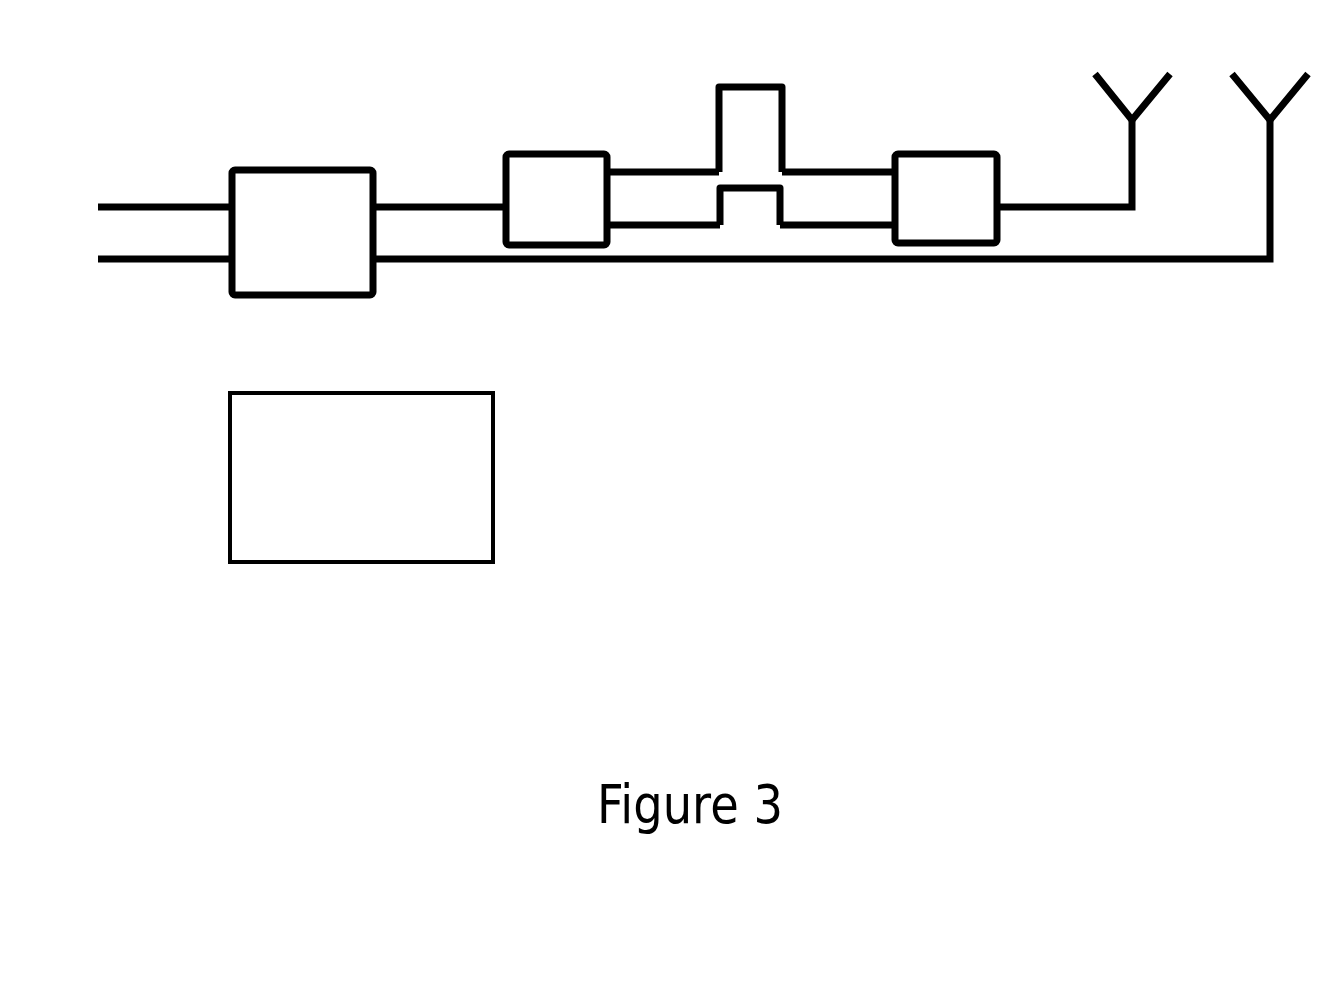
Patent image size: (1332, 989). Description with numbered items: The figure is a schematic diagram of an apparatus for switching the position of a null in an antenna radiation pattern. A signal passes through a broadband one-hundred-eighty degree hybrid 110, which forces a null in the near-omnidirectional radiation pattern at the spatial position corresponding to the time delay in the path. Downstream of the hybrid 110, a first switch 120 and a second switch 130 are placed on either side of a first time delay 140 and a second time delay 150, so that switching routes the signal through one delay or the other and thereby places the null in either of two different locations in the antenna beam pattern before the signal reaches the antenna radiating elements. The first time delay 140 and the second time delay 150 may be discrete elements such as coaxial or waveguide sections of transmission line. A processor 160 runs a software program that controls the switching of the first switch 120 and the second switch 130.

The broadband 180 degree hybrid 110 is at (222, 182).
The first switch 120 is at (502, 167).
The second switch 130 is at (946, 149).
The first time delay 140 is at (712, 99).
The second time delay 150 is at (714, 199).
The processor 160 is at (224, 419).